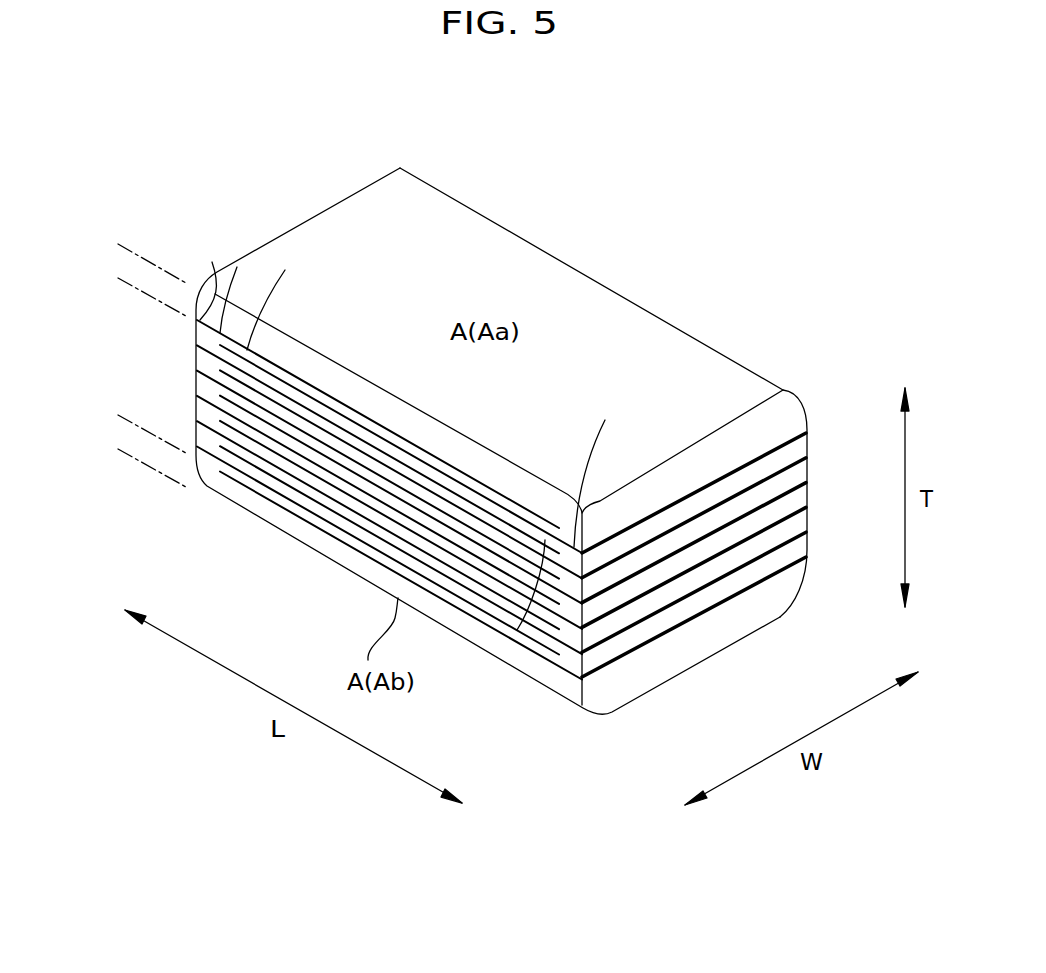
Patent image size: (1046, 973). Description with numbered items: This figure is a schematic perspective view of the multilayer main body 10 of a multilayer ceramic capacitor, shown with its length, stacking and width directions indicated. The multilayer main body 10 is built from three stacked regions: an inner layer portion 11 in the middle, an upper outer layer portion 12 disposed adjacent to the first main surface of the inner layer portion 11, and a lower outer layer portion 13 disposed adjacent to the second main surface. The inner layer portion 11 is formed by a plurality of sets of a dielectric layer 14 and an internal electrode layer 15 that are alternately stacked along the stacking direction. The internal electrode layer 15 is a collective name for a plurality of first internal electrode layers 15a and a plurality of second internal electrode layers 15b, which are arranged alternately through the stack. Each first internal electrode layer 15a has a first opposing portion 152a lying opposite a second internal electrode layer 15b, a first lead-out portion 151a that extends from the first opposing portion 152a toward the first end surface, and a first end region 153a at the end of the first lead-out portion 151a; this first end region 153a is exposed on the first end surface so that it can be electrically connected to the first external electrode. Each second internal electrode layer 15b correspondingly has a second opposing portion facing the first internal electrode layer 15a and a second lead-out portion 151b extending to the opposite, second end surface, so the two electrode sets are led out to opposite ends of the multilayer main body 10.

The multilayer main body 10 is at (708, 280).
The inner layer portion 11 is at (118, 408).
The upper outer layer portion 12 is at (118, 278).
The lower outer layer portion 13 is at (118, 450).
The dielectric layer 14 is at (517, 630).
The internal electrode layer 15 is at (482, 389).
The first internal electrode layer 15a is at (262, 225).
The second internal electrode layer 15b is at (669, 425).
The first lead-out portion 151a is at (237, 267).
The second lead-out portion 151b is at (605, 420).
The first opposing portion 152a is at (303, 248).
The first end region 153a is at (212, 262).